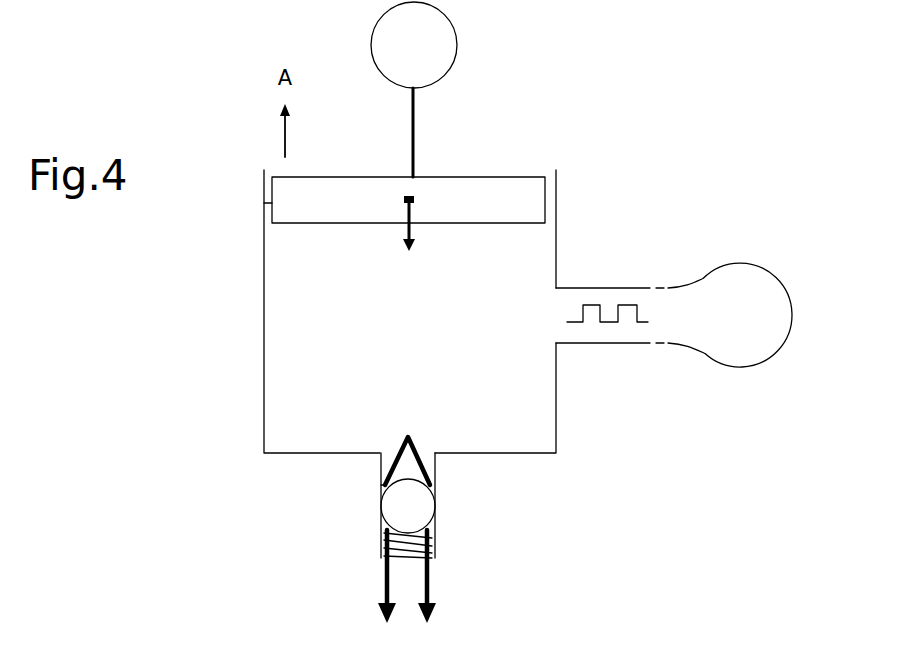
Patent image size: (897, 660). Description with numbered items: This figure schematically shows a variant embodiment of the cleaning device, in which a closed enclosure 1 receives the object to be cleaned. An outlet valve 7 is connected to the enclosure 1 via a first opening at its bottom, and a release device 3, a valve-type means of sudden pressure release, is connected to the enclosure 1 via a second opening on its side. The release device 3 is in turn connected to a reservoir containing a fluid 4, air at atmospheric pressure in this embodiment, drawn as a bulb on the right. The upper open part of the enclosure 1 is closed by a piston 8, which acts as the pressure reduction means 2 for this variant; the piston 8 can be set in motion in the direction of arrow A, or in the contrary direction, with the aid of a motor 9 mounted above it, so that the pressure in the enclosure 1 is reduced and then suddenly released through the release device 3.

The enclosure 1 is at (518, 390).
The pressure reduction means 2 is at (270, 203).
The means of sudden pressure release 3 is at (570, 298).
The reservoir containing a fluid 4 is at (722, 340).
The outlet valve 7 is at (415, 507).
The piston 8 is at (528, 205).
The motor 9 is at (450, 32).